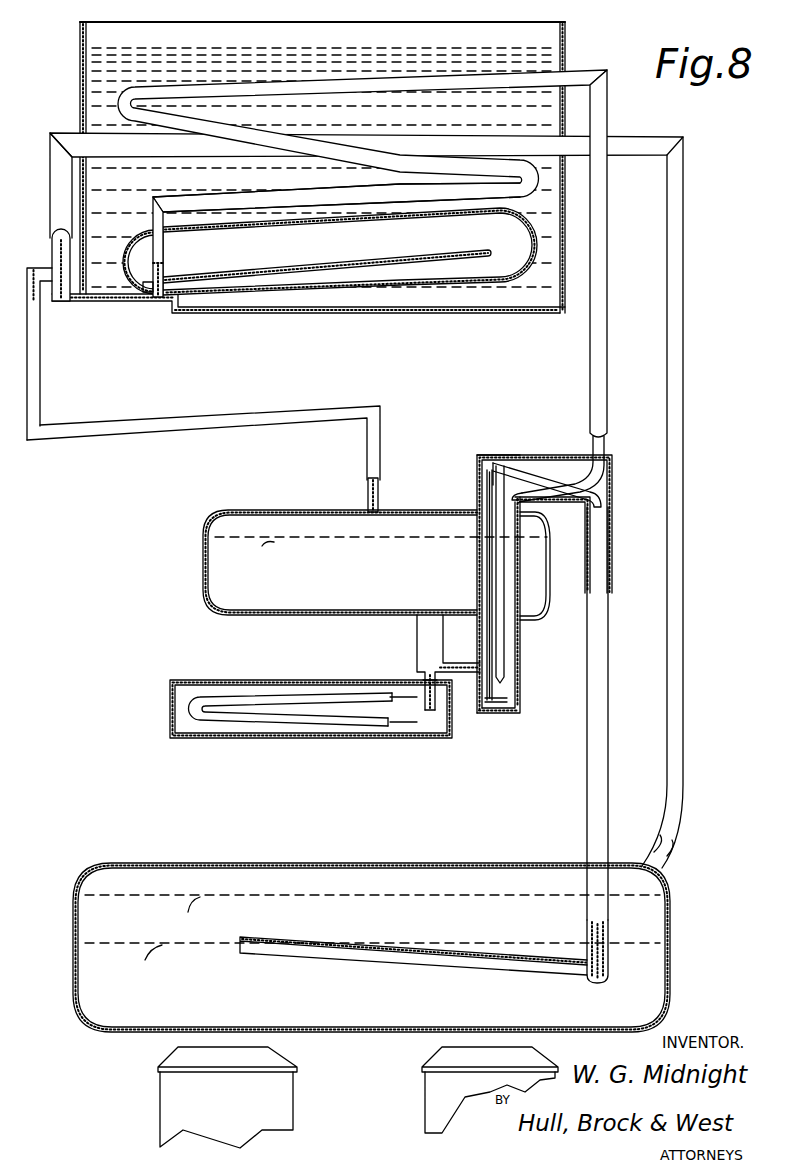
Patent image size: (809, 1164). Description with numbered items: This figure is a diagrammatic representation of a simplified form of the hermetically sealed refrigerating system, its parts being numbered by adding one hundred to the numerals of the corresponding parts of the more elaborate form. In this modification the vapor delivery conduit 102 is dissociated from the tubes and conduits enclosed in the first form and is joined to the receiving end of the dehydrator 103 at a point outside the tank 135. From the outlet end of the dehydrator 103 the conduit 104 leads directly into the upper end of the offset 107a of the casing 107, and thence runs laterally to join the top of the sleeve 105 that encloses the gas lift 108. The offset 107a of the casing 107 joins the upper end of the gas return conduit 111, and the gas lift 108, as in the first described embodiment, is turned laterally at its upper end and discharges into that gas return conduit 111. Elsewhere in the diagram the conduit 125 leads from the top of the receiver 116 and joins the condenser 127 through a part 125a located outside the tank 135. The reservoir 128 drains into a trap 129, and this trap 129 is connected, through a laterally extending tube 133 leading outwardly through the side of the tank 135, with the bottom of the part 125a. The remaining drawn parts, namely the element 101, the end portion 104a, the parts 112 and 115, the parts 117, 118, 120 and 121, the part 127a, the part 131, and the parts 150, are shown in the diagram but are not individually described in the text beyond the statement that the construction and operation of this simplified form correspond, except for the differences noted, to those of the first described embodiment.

The drum 101 is at (440, 862).
The vapor delivery conduit 102 is at (683, 425).
The dehydrator 103 is at (470, 80).
The conduit 104 is at (608, 107).
The pipe end 104a is at (572, 470).
The sleeve 105 is at (520, 632).
The casing 107 is at (476, 588).
The offset of casing 107a is at (500, 455).
The gas lift 108 is at (494, 550).
The gas return conduit 111 is at (585, 752).
The tube 112 is at (446, 945).
The unit 115 is at (166, 642).
The receiver 116 is at (202, 568).
The tube 117 is at (305, 722).
The pipe 118 is at (415, 643).
The box 120 is at (228, 738).
The connection 121 is at (450, 688).
The conduit 125 is at (204, 420).
The part outside the tank 125a is at (48, 140).
The condenser 127 is at (250, 200).
The end plate 127a is at (163, 245).
The reservoir 128 is at (136, 232).
The trap 129 is at (165, 300).
The tube 131 is at (327, 240).
The laterally extending tube 133 is at (105, 300).
The tank 135 is at (567, 33).
The broken supports 150 is at (437, 1092).